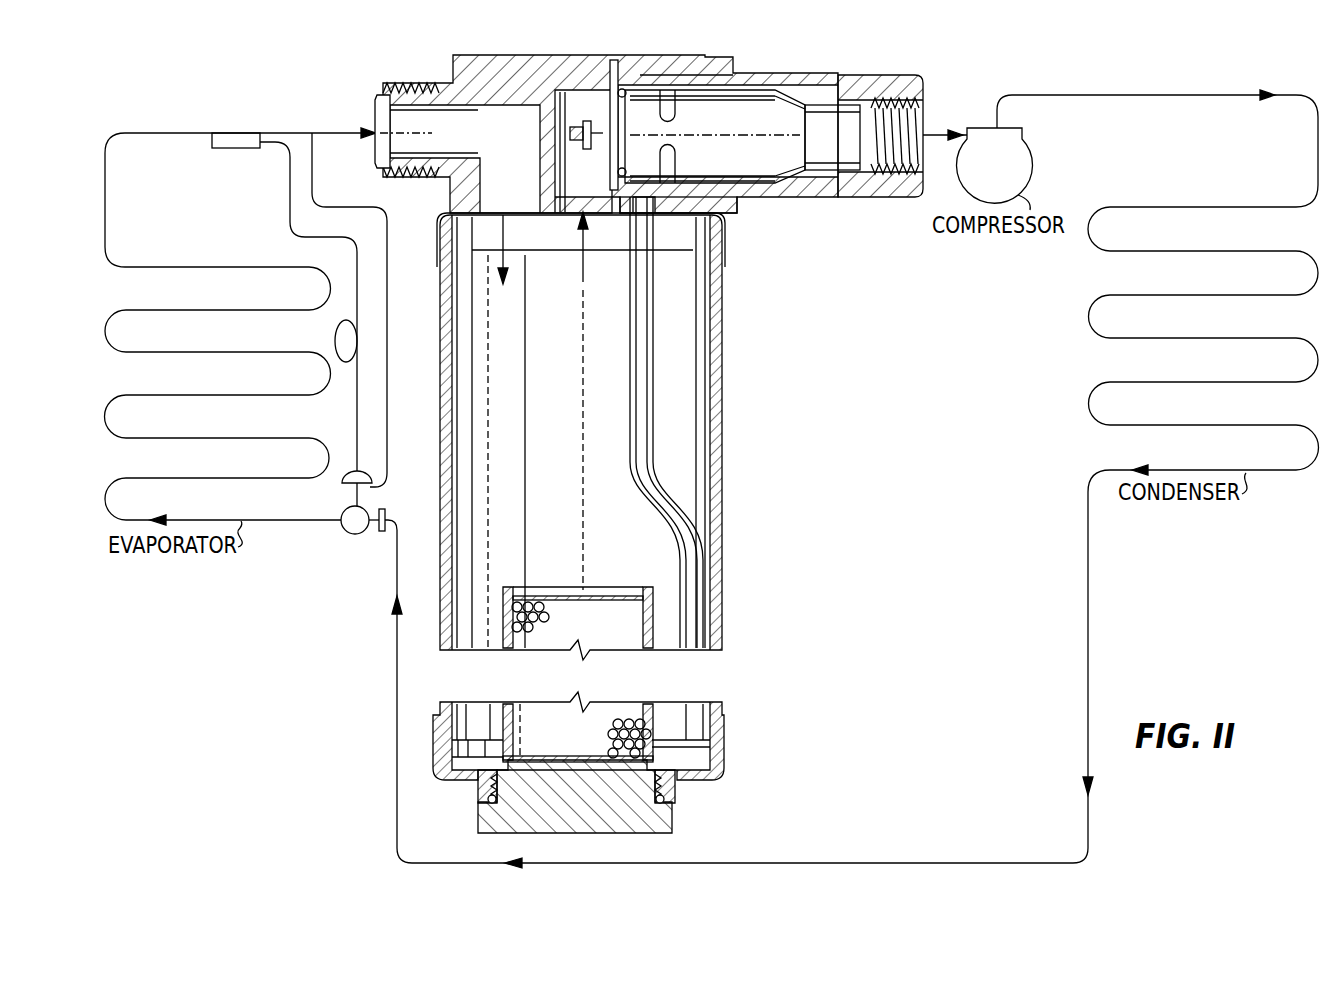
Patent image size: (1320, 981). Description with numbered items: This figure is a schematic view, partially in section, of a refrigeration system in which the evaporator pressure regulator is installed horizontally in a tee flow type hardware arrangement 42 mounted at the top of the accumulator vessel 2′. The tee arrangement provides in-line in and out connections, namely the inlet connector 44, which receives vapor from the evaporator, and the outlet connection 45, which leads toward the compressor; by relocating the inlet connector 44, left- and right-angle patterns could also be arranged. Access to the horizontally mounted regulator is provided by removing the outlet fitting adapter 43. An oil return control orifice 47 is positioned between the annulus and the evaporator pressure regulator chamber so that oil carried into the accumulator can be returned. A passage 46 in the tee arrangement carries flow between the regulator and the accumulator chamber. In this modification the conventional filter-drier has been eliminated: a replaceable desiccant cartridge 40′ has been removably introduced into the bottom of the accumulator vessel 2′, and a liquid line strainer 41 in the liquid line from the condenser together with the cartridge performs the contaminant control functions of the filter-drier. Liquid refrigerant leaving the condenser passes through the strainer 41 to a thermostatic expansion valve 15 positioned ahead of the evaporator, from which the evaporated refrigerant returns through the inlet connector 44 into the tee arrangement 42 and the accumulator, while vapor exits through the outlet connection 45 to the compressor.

The tee flow hardware arrangement 42 is at (548, 40).
The outlet fitting adapter 43 is at (770, 46).
The inlet connector 44 is at (436, 60).
The outlet connection 45 is at (878, 75).
The inlet passage 46 is at (540, 208).
The oil return control orifice 47 is at (716, 205).
The accumulator vessel 2′ is at (447, 472).
The liquid line strainer 41 is at (386, 517).
The thermostatic expansion valve 15 is at (367, 530).
The replaceable desiccant cartridge 40′ is at (612, 720).